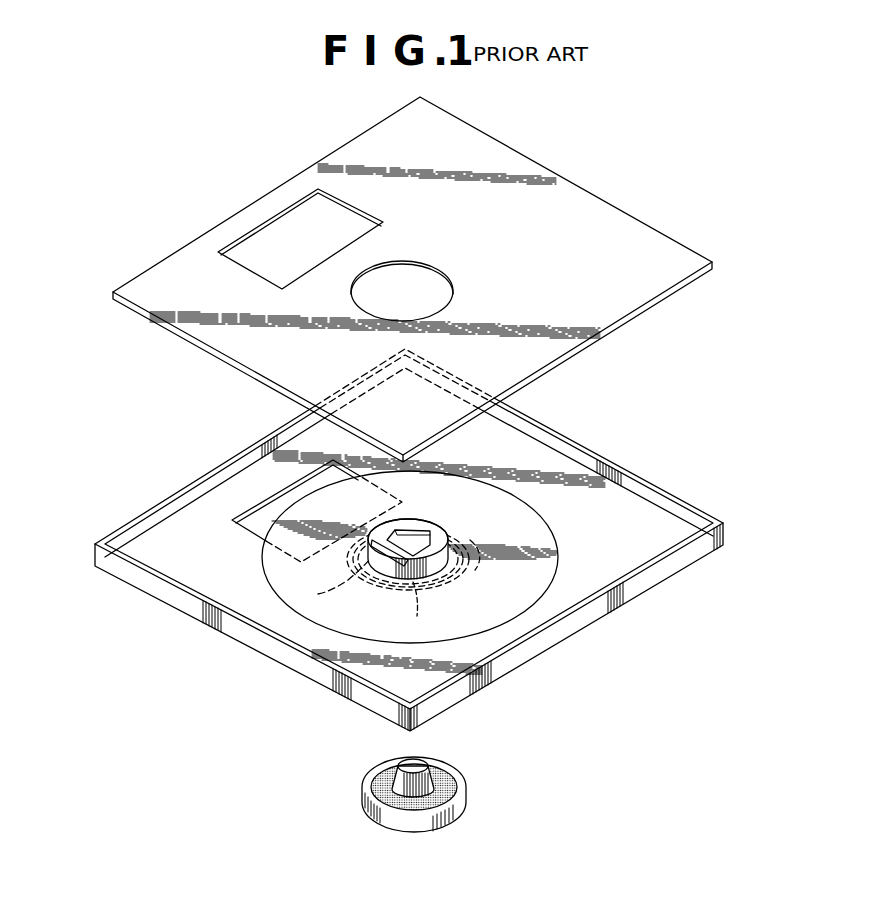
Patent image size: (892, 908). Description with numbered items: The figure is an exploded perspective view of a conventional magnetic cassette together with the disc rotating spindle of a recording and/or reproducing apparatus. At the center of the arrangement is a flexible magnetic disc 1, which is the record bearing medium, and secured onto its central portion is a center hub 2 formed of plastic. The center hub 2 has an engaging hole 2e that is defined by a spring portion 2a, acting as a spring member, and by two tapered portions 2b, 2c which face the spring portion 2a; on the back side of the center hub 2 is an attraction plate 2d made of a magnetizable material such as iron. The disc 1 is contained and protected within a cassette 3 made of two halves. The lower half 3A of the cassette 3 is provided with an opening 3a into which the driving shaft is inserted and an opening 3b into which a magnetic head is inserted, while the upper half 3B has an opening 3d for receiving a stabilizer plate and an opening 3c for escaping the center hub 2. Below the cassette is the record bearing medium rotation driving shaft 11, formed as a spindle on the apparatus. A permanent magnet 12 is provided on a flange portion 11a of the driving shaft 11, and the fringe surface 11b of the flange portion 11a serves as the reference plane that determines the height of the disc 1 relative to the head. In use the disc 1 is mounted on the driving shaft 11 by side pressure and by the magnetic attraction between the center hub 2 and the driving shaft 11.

The flexible magnetic disc 1 is at (530, 523).
The center hub 2 is at (429, 559).
The spring portion 2a is at (397, 556).
The tapered portion 2b is at (411, 527).
The tapered portion 2c is at (447, 532).
The attraction plate 2d is at (416, 611).
The engaging hole 2e is at (445, 563).
The cassette 3 is at (409, 414).
The lower half of the cassette 3A is at (409, 540).
The upper half of the cassette 3B is at (412, 279).
The opening for driving shaft 3a is at (332, 588).
The opening for magnetic head 3b is at (244, 518).
The opening for escaping center hub 3c is at (420, 262).
The opening for stabilizer plate 3d is at (278, 210).
The record bearing medium rotation driving shaft 11 is at (414, 810).
The flange portion 11a is at (448, 823).
The fringe surface 11b is at (380, 767).
The permanent magnet 12 is at (455, 783).